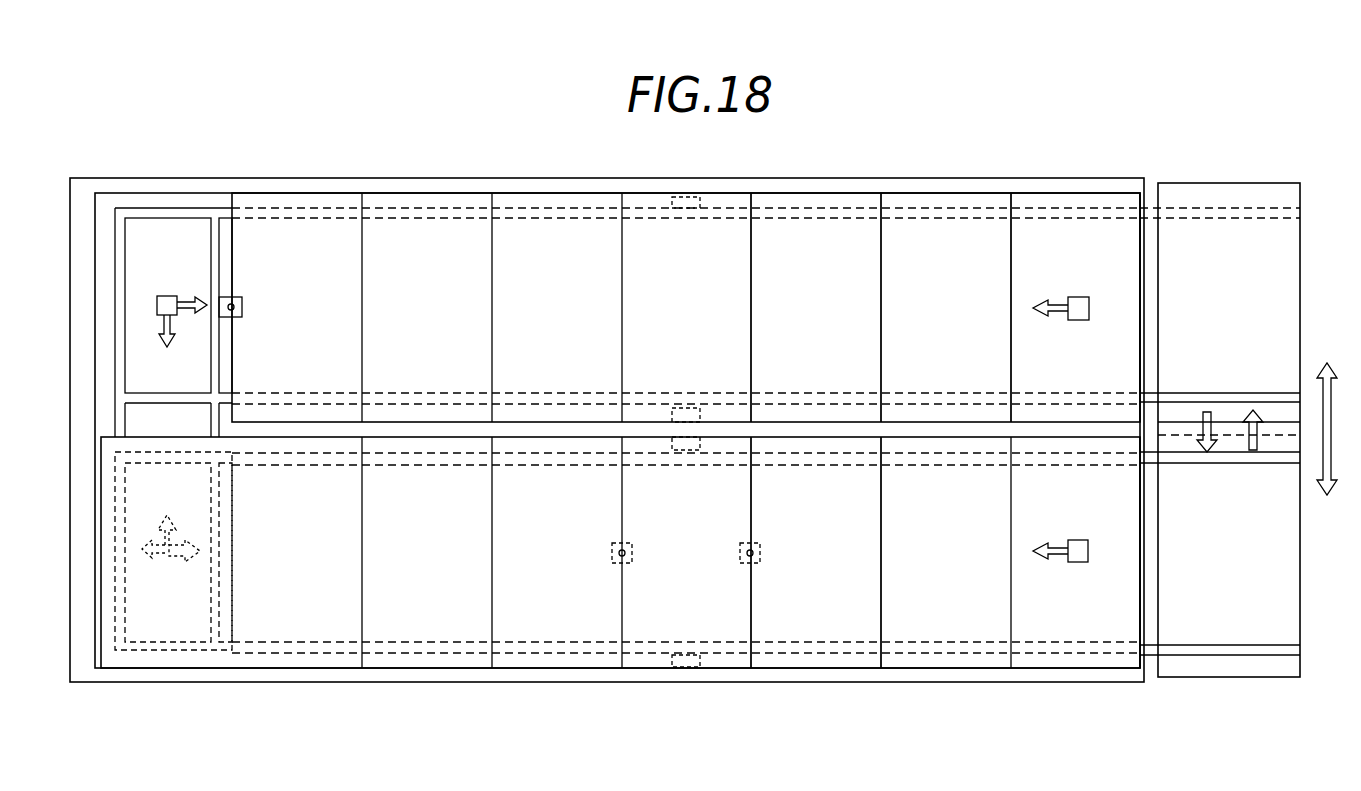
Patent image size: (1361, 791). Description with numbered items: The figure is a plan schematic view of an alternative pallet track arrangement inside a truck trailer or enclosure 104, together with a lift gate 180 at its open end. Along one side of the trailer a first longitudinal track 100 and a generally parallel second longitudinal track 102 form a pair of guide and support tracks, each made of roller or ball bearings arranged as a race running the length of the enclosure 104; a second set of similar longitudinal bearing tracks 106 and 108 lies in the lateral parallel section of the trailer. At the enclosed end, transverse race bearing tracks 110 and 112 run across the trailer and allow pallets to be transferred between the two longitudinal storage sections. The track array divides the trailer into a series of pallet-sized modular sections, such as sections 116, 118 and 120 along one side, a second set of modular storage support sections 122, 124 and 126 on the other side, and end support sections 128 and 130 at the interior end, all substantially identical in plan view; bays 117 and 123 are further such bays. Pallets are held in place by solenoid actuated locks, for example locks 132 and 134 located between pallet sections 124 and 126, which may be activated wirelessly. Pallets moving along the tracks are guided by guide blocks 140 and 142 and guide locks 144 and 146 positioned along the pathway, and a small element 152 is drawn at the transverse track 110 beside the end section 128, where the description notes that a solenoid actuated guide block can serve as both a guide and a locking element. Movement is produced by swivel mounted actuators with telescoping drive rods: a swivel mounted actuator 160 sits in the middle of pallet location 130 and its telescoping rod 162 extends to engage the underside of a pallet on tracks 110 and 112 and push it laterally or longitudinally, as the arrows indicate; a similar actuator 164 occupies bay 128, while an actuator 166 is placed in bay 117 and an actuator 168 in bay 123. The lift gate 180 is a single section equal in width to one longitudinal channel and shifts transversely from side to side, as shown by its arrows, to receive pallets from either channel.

The first longitudinal track 100 is at (411, 218).
The second longitudinal track 102 is at (410, 392).
The truck trailer or enclosure 104 is at (388, 683).
The longitudinal track 106 is at (404, 467).
The longitudinal track 108 is at (392, 642).
The transverse race bearing track 110 is at (221, 345).
The transverse race bearing track 112 is at (126, 250).
The modular pallet section 116 is at (922, 295).
The bay 117 is at (1050, 264).
The modular pallet section 118 is at (794, 295).
The modular pallet section 120 is at (650, 295).
The modular storage support section 122 is at (797, 599).
The bay 123 is at (1057, 606).
The modular storage support section 124 is at (665, 599).
The modular storage support section 126 is at (535, 532).
The end support section 128 is at (147, 381).
The end support section 130 is at (142, 501).
The solenoid actuated lock 132 is at (630, 542).
The solenoid actuated lock 134 is at (758, 542).
The guide block 140 is at (700, 406).
The guide block 142 is at (718, 193).
The guide lock 144 is at (672, 654).
The guide lock 146 is at (672, 452).
The pivot connector 152 is at (244, 305).
The swivel mounted actuator 160 is at (160, 560).
The telescoping rod 162 is at (172, 525).
The actuator 164 is at (157, 303).
The actuator 166 is at (1078, 321).
The actuator 168 is at (1075, 539).
The lift gate 180 is at (1220, 185).